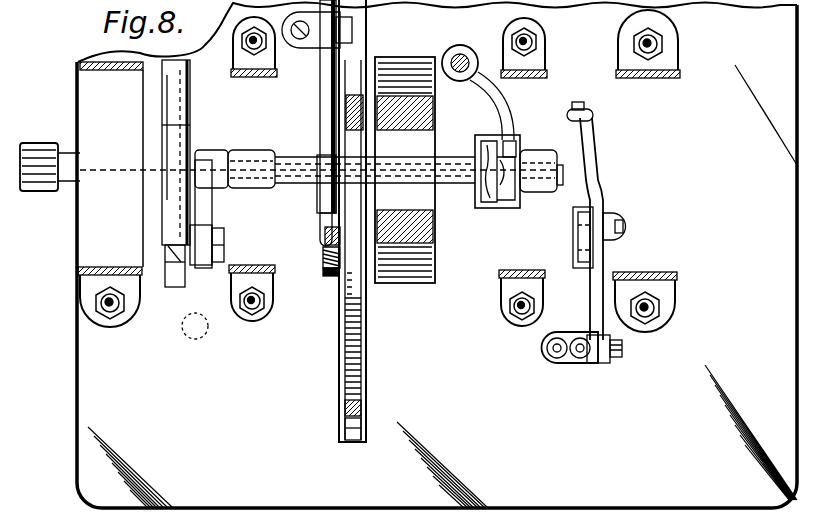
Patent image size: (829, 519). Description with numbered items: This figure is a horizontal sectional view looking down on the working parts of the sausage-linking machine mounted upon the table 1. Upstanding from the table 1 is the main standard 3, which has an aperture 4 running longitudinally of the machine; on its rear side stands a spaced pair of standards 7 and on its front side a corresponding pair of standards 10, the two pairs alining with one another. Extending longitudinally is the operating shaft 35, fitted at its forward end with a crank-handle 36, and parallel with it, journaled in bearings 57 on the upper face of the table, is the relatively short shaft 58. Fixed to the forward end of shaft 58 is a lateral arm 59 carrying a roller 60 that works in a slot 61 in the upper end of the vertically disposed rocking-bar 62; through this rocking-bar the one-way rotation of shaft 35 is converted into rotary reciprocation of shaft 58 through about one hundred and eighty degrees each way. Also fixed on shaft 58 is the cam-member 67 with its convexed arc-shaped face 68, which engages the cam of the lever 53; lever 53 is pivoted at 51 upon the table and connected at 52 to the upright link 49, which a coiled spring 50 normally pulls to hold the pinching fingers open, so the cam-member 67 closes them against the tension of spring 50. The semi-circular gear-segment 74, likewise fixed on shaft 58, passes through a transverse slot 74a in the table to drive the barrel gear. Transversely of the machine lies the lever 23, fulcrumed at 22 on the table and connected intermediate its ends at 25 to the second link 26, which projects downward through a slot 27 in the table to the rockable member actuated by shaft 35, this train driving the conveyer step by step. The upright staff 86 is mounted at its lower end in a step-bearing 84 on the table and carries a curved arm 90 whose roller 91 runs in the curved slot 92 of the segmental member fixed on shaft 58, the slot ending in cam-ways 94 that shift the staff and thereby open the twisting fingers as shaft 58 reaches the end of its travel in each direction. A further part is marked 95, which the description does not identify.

The table 1 is at (437, 256).
The main standard 3 is at (404, 272).
The aperture 4 is at (415, 205).
The standards 7 is at (533, 78).
The standards 10 is at (112, 70).
The pivot 22 is at (600, 353).
The lever 23 is at (598, 180).
The pivot 25 is at (620, 222).
The second link 26 is at (585, 266).
The slot 27 is at (589, 113).
The operating shaft 35 is at (69, 179).
The crank-handle 36 is at (40, 186).
The link 49 is at (323, 262).
The coiled spring 50 is at (330, 277).
The pivot 51 is at (352, 28).
The pivot 52 is at (325, 238).
The lever 53 is at (328, 80).
The bearings 57 is at (250, 186).
The shaft 58 is at (297, 175).
The lateral arm 59 is at (203, 268).
The roller 60 is at (165, 262).
The slot 61 is at (182, 290).
The rocking-bar 62 is at (176, 218).
The cam-member 67 is at (183, 128).
The convexed face 68 is at (312, 197).
The gear-segment 74 is at (357, 432).
The slot 74a is at (340, 392).
The step-bearing 84 is at (462, 46).
The staff 86 is at (461, 70).
The curved arm 90 is at (500, 106).
The roller 91 is at (510, 145).
The slot 92 is at (506, 183).
The cam-ways 94 is at (500, 201).
The cam 95 is at (498, 193).